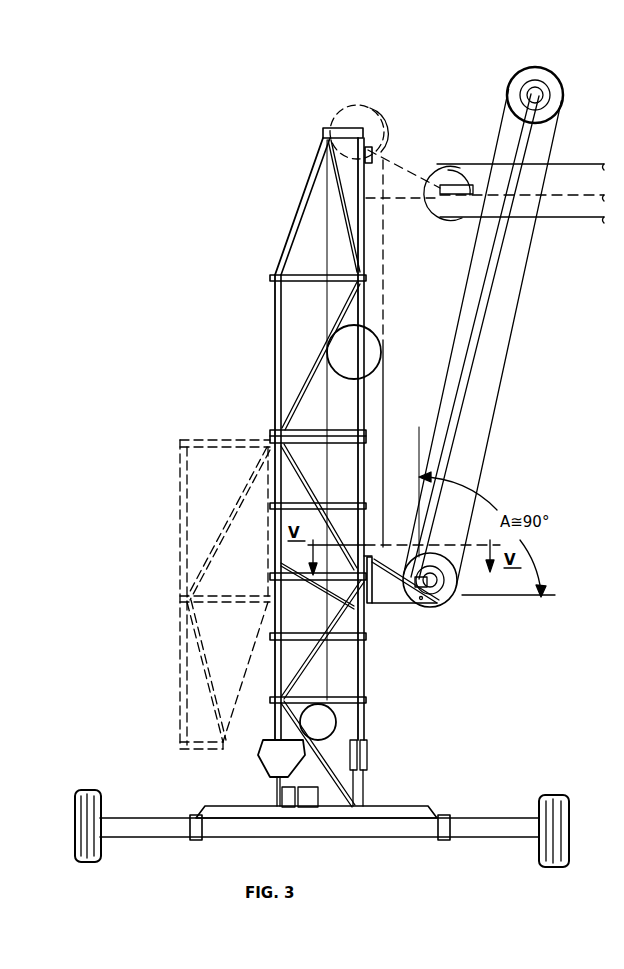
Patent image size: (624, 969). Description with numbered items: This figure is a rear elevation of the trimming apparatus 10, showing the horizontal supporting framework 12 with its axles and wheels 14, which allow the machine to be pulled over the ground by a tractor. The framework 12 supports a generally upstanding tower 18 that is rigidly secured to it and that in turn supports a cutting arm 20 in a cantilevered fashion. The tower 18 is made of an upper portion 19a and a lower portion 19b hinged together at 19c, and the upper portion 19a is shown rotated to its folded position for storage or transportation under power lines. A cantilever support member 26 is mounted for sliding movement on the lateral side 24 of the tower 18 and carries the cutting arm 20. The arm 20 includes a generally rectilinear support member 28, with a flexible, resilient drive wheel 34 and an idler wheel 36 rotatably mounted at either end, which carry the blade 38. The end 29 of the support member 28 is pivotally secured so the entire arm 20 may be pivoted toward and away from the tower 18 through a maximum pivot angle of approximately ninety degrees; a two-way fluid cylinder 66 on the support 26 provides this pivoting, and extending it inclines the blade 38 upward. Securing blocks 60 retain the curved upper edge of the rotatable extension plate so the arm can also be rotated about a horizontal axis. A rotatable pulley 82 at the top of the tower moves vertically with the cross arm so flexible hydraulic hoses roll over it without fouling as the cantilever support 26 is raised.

The trimming apparatus 10 is at (288, 107).
The horizontal supporting framework 12 is at (218, 808).
The wheels 14 is at (84, 790).
The tower 18 is at (262, 350).
The upper portion 19a is at (300, 203).
The lower portion 19b is at (364, 683).
The hinge 19c is at (272, 437).
The cutting arm 20 is at (482, 331).
The lateral side 24 is at (362, 309).
The cantilever support member 26 is at (382, 602).
The support member 28 is at (482, 325).
The end 29 is at (438, 606).
The drive wheel 34 is at (448, 592).
The idler wheel 36 is at (534, 73).
The blade 38 is at (525, 278).
The securing blocks 60 is at (374, 556).
The two-way fluid cylinder 66 is at (424, 592).
The rotatable pulley 82 is at (370, 117).